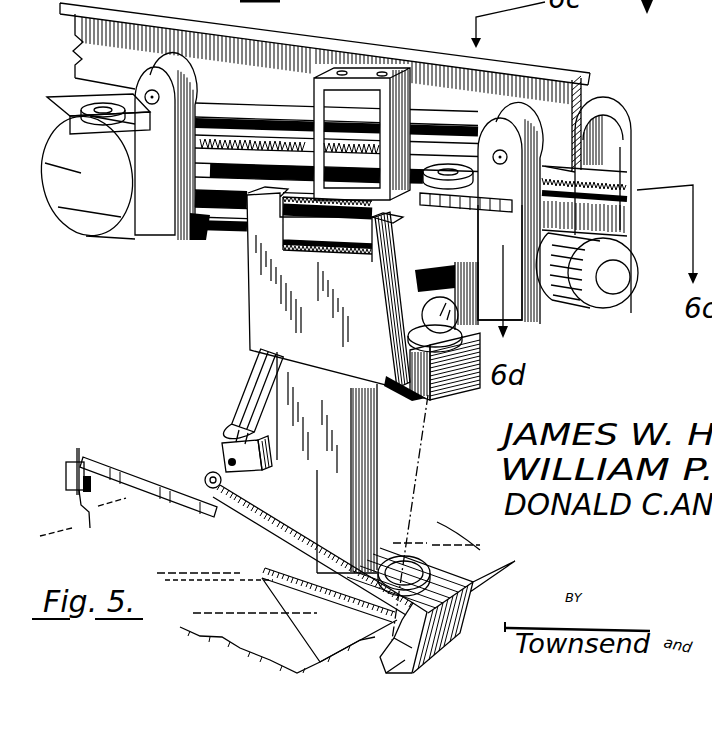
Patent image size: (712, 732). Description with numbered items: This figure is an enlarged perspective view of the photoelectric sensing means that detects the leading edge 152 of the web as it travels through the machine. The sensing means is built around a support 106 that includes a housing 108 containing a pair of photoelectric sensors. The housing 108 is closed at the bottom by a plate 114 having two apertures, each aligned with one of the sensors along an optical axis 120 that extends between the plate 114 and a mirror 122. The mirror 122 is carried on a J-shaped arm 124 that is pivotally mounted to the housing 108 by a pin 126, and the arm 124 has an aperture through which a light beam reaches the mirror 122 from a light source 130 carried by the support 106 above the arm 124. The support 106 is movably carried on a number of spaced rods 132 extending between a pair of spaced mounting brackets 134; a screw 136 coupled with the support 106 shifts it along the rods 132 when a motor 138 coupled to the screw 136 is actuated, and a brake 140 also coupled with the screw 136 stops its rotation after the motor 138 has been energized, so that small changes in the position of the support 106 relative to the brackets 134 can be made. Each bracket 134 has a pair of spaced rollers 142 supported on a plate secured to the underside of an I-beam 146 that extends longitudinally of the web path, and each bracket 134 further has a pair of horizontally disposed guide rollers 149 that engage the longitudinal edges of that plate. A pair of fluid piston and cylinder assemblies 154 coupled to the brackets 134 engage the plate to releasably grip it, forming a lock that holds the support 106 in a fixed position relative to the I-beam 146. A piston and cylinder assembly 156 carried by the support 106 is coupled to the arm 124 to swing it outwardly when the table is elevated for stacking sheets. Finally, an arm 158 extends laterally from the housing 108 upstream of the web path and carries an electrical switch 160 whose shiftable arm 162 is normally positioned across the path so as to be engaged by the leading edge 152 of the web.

The support 106 is at (406, 476).
The housing 108 is at (327, 462).
The plate 114 is at (302, 588).
The optical axis 120 is at (390, 625).
The mirror 122 is at (385, 642).
The J-shaped arm 124 is at (472, 594).
The pin 126 is at (243, 545).
The light source 130 is at (418, 306).
The rods 132 is at (238, 208).
The mounting brackets 134 is at (194, 222).
The screw 136 is at (468, 229).
The motor 138 is at (102, 218).
The brake 140 is at (615, 262).
The rollers 142 is at (195, 73).
The I-beam 146 is at (78, 48).
The guide rollers 149 is at (72, 119).
The leading edge 152 is at (214, 638).
The fluid piston and cylinder assemblies 154 is at (330, 100).
The piston and cylinder assembly 156 is at (246, 386).
The arm 158 is at (152, 463).
The electrical switch 160 is at (66, 474).
The shiftable arm 162 is at (93, 524).